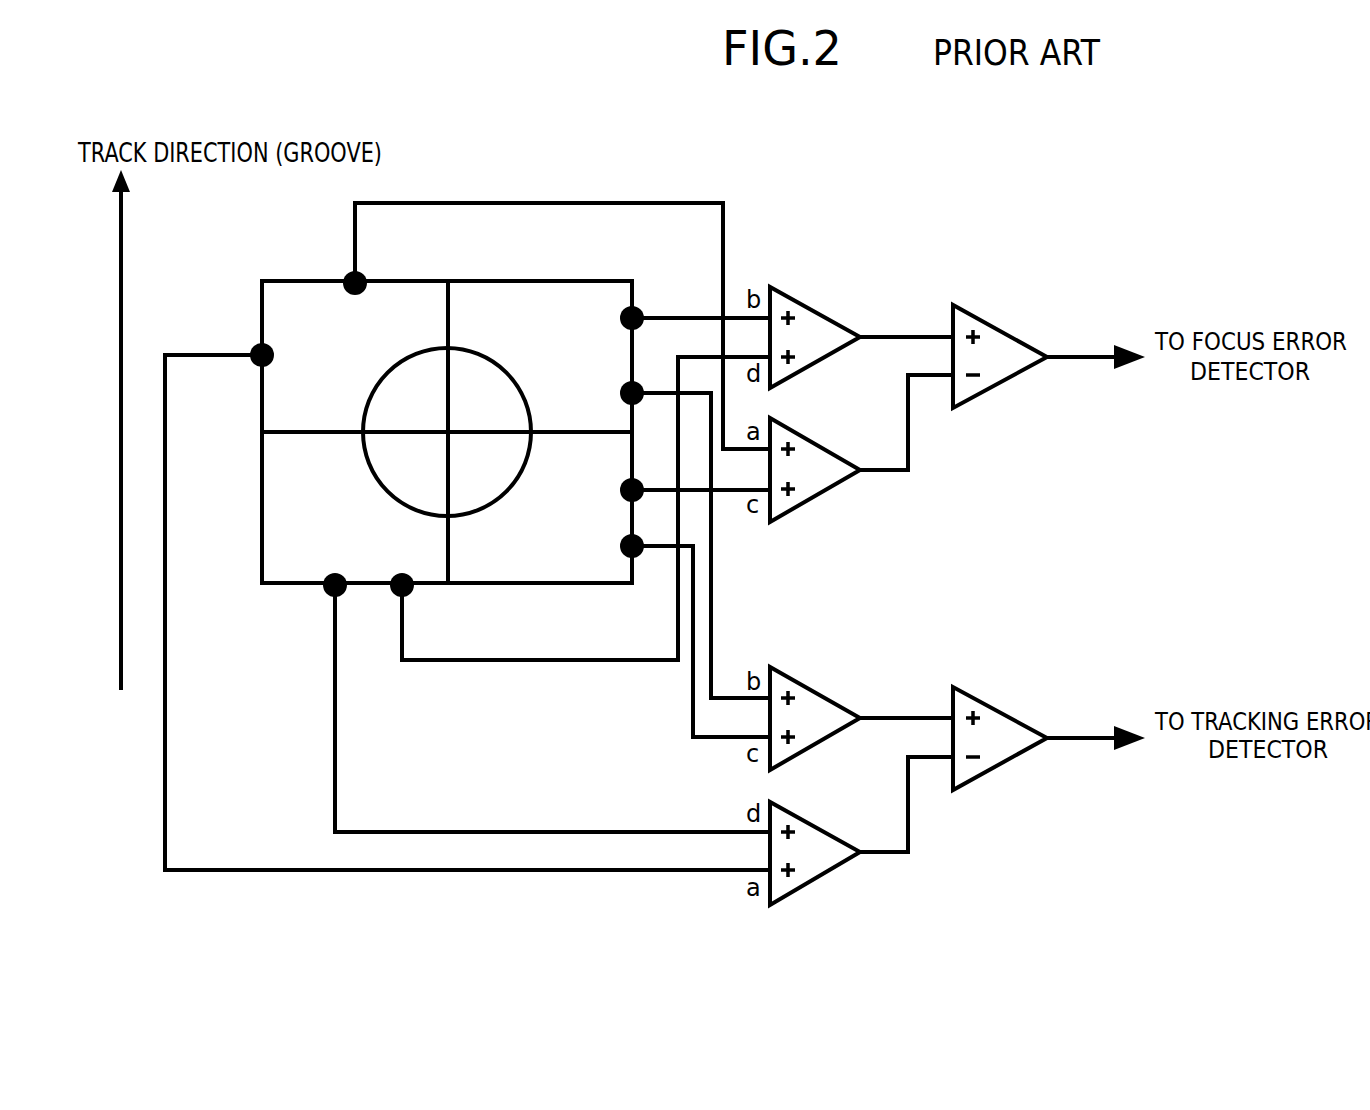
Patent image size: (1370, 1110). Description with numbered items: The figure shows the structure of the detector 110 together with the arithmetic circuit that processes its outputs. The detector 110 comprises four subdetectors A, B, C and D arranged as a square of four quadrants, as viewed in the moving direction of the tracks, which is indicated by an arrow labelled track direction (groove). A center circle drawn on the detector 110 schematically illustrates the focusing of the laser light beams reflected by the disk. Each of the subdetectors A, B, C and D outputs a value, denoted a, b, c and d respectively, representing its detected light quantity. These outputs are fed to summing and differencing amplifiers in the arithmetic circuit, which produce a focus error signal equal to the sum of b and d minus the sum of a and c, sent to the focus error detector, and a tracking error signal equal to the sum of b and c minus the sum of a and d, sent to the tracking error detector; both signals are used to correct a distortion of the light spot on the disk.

The detector 110 is at (426, 468).
The subdetector A is at (355, 356).
The subdetector B is at (540, 356).
The subdetector C is at (540, 507).
The subdetector D is at (355, 507).